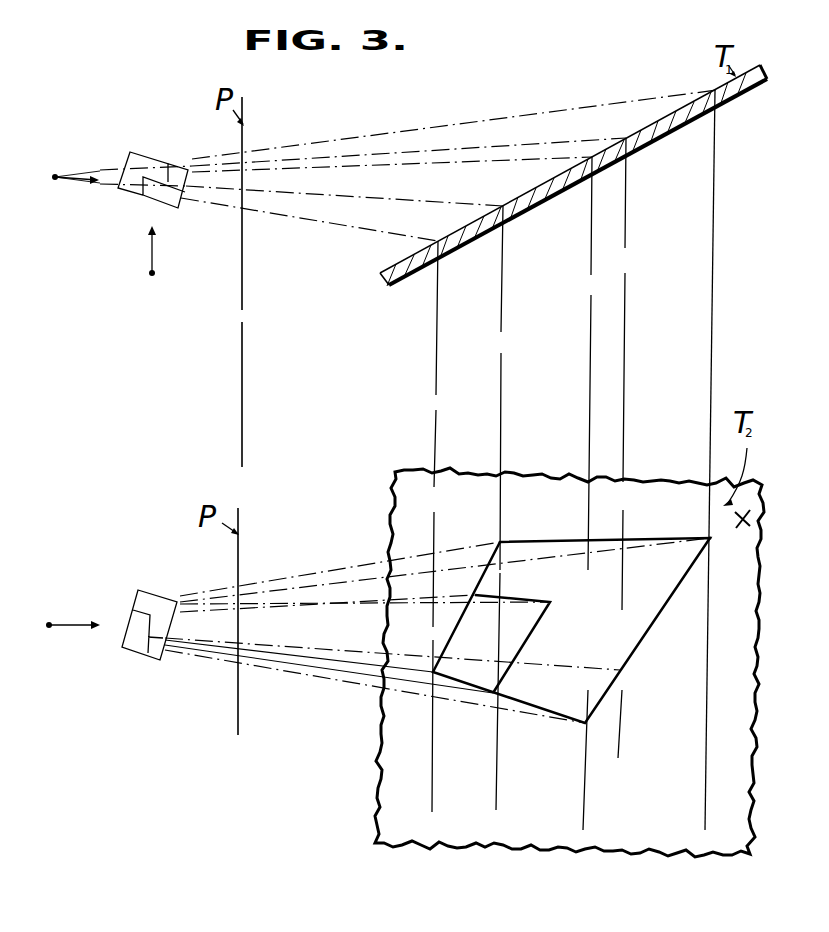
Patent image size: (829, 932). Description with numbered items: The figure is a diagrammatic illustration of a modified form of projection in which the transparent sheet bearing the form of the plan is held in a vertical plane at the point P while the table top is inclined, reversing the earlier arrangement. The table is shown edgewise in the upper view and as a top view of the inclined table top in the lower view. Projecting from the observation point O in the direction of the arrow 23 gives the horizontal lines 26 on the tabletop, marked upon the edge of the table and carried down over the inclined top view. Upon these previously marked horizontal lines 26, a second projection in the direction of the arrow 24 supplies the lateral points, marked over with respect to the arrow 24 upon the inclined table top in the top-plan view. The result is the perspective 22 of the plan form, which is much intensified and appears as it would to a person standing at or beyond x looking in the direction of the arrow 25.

The perspective form of the plan 22 is at (647, 633).
The arrow indicating projection direction 23 is at (80, 172).
The arrow indicating projection direction 24 is at (148, 243).
The arrow indicating viewing direction 25 is at (717, 534).
The horizontal lines 26 is at (432, 812).